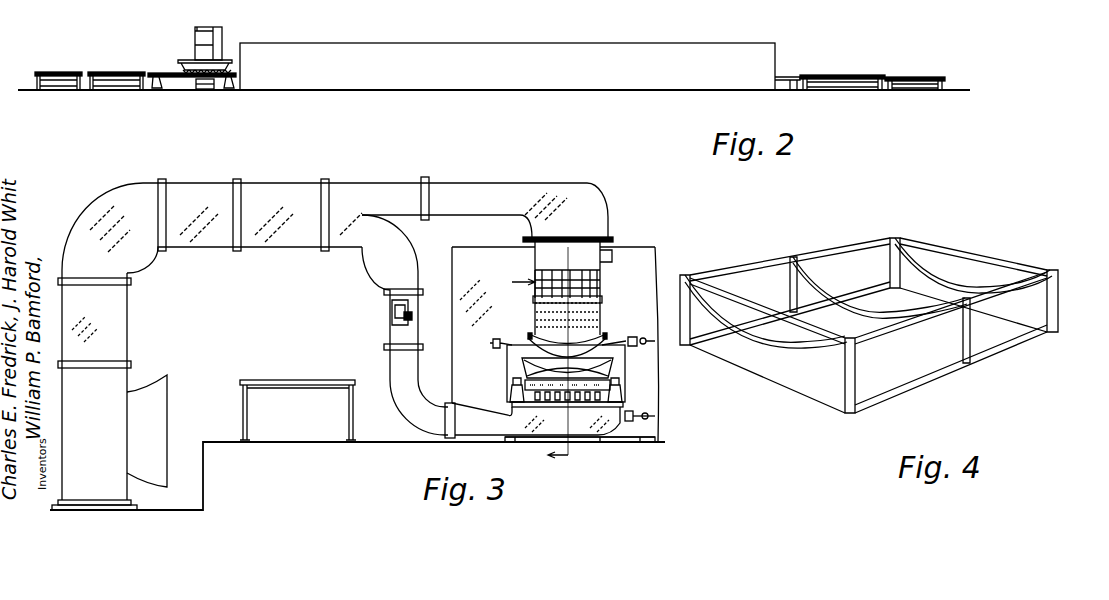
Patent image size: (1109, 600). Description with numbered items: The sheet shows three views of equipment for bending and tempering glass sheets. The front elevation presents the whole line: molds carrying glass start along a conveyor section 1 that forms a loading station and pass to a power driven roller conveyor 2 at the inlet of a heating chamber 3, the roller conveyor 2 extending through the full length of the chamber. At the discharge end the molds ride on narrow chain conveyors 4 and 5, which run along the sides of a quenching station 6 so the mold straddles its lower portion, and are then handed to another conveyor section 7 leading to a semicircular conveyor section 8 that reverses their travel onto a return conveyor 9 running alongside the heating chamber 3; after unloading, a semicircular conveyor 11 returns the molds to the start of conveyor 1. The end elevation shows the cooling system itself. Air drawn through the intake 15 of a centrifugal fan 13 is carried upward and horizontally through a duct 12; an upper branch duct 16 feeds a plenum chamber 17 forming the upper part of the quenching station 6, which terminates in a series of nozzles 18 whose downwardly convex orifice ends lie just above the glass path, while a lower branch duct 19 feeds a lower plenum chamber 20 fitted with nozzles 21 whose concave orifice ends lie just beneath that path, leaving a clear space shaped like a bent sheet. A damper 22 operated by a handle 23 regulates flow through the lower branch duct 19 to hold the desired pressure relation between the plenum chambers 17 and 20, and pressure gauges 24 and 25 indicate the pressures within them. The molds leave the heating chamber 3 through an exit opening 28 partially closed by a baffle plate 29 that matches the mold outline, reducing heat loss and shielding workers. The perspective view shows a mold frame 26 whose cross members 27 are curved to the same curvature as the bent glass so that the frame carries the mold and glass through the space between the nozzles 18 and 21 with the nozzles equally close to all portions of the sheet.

In FIG. 2, the conveyor section 1 is at (848, 75).
In FIG. 2, the power driven roller conveyor 2 is at (787, 77).
In FIG. 2, the heating chamber 3 is at (505, 62).
In FIG. 3, the heating chamber 3 is at (640, 262).
In FIG. 2, the chain conveyor 4 is at (192, 78).
In FIG. 3, the chain conveyor 4 is at (620, 383).
In FIG. 3, the chain conveyor 5 is at (513, 383).
In FIG. 2, the quenching station 6 is at (168, 69).
In FIG. 3, the quenching station 6 is at (613, 316).
In FIG. 2, the conveyor section 7 is at (113, 72).
In FIG. 2, the semicircular conveyor section 8 is at (58, 72).
In FIG. 3, the return conveyor 9 is at (283, 380).
In FIG. 2, the semicircular conveyor 11 is at (918, 77).
In FIG. 2, the duct 12 is at (216, 35).
In FIG. 3, the duct 12 is at (288, 208).
In FIG. 3, the centrifugal fan 13 is at (108, 331).
In FIG. 3, the intake 15 is at (148, 412).
In FIG. 3, the upper branch duct 16 is at (450, 200).
In FIG. 2, the plenum chamber 17 is at (198, 46).
In FIG. 3, the plenum chamber 17 is at (545, 261).
In FIG. 3, the nozzles 18 is at (537, 333).
In FIG. 3, the lower branch duct 19 is at (397, 255).
In FIG. 2, the lower plenum chamber 20 is at (206, 86).
In FIG. 3, the lower plenum chamber 20 is at (590, 427).
In FIG. 3, the nozzles 21 is at (600, 375).
In FIG. 3, the damper 22 is at (414, 318).
In FIG. 3, the handle 23 is at (388, 312).
In FIG. 3, the pressure gauge 24 is at (610, 258).
In FIG. 3, the pressure gauge 25 is at (632, 414).
In FIG. 4, the mold frame 26 is at (963, 378).
In FIG. 4, the cross members 27 is at (782, 343).
In FIG. 3, the exit opening 28 is at (508, 358).
In FIG. 3, the baffle plate 29 is at (520, 373).